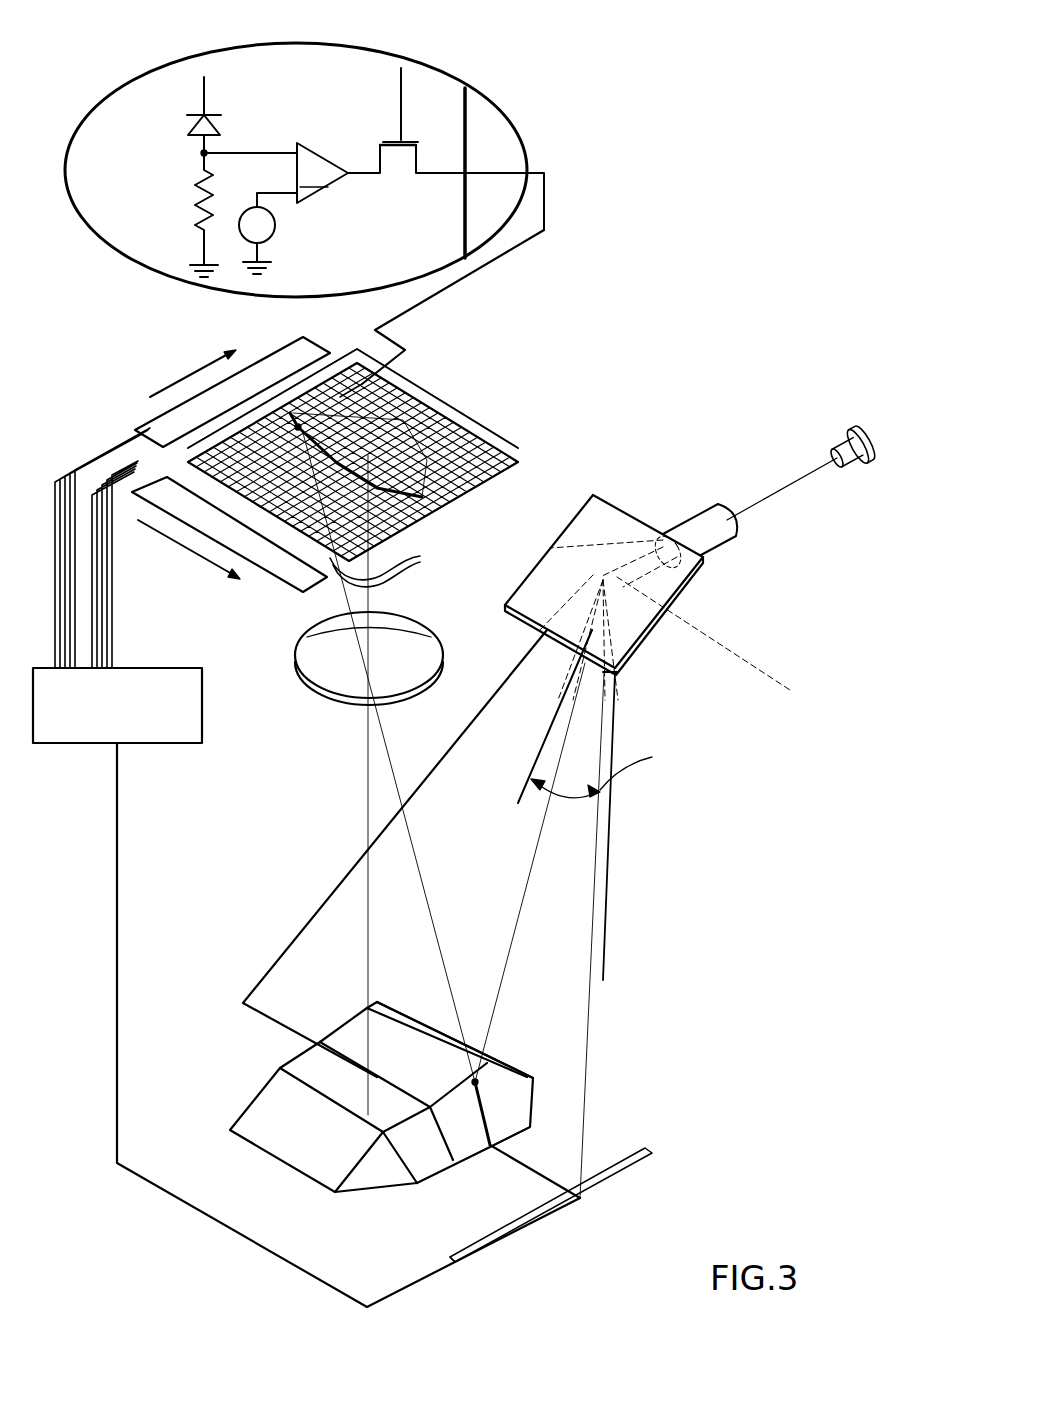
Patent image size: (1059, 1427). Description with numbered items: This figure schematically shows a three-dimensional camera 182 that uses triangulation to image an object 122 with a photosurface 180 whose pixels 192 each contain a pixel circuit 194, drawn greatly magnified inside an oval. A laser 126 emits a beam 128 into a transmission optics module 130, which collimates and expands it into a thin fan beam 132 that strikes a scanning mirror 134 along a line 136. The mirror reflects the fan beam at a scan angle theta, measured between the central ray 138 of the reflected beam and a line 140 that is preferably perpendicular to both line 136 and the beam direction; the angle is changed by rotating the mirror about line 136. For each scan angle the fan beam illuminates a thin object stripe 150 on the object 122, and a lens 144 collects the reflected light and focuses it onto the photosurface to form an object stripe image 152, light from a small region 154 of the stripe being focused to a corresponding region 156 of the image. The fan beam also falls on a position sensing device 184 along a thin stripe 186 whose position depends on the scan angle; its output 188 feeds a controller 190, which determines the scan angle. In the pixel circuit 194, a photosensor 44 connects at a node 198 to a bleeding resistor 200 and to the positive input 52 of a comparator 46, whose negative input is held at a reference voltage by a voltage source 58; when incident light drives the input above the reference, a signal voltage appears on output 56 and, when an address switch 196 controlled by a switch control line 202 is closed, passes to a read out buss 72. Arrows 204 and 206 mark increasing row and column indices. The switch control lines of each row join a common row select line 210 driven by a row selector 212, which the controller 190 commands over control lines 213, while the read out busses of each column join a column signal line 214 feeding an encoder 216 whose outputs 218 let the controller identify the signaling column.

The photosensor 44 is at (196, 125).
The comparator 46 is at (297, 150).
The positive input 52 is at (314, 137).
The output 56 is at (351, 170).
The voltage source 58 is at (276, 226).
The read out buss 72 is at (467, 150).
The object 122 is at (313, 1130).
The laser 126 is at (843, 430).
The beam 128 is at (780, 492).
The transmission optics module 130 is at (718, 548).
The fan beam 132 is at (618, 620).
The scanning mirror 134 is at (600, 492).
The line 136 is at (580, 557).
The central ray 138 is at (557, 712).
The line 140 is at (617, 673).
The lens 144 is at (403, 616).
The object stripe 150 is at (427, 1037).
The object stripe image 152 is at (447, 457).
The small region 154 is at (478, 1080).
The region 156 is at (403, 392).
The photosurface 180 is at (490, 328).
The 3D camera 182 is at (653, 330).
The position sensing device 184 is at (652, 1150).
The thin stripe 186 is at (553, 1205).
The output 188 is at (452, 1262).
The controller 190 is at (180, 745).
The pixels 192 is at (417, 423).
The pixel circuit 194 is at (552, 78).
The address switch 196 is at (418, 145).
The node 198 is at (200, 153).
The bleeding resistor 200 is at (200, 215).
The switch control line 202 is at (400, 100).
The arrow 204 is at (180, 541).
The arrow 206 is at (175, 380).
The row select line 210 is at (399, 566).
The row selector 212 is at (262, 555).
The control lines 213 is at (92, 628).
The column signal line 214 is at (341, 368).
The encoder 216 is at (255, 373).
The outputs 218 is at (97, 462).